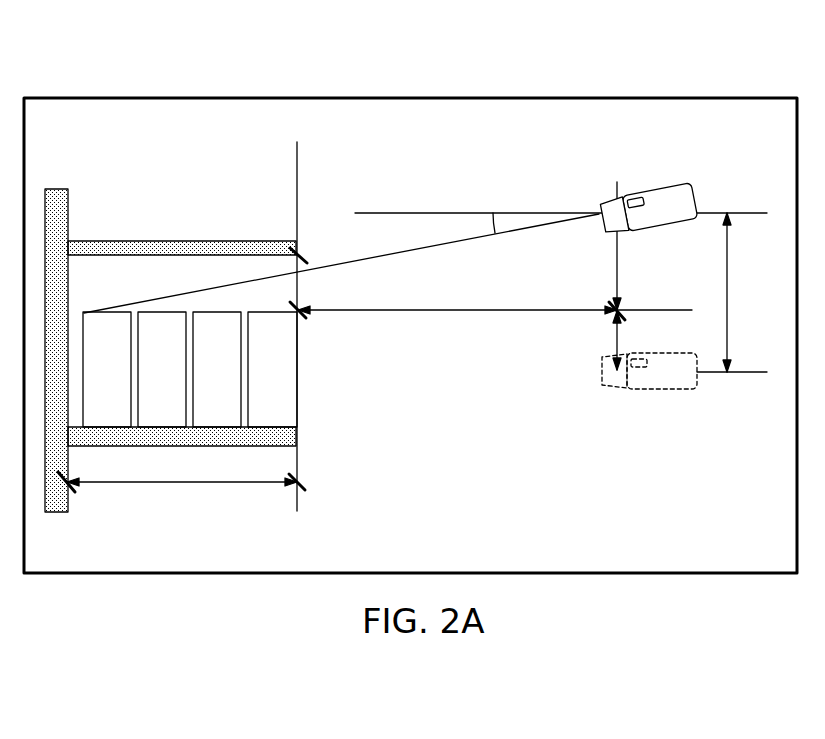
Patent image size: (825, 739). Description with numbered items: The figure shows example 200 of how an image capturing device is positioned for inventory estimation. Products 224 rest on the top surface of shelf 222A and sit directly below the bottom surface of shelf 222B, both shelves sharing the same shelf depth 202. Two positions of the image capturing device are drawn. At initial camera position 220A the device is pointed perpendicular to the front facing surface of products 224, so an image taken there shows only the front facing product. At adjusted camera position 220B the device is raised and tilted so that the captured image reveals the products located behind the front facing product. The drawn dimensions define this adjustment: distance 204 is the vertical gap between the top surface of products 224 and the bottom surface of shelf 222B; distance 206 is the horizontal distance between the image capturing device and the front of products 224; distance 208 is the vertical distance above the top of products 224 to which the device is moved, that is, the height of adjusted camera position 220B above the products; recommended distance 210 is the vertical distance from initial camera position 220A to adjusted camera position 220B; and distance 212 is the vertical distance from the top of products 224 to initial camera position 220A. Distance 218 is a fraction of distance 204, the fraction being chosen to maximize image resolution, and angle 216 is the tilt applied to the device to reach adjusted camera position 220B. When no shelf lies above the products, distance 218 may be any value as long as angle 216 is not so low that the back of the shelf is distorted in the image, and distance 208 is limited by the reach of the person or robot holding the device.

The example 200 is at (178, 78).
The shelf depth 202 is at (124, 485).
The distance 204 is at (293, 263).
The distance 206 is at (484, 312).
The distance 208 is at (620, 266).
The recommended distance 210 is at (727, 315).
The distance 212 is at (617, 336).
The angle 216 is at (458, 230).
The distance 218 is at (298, 288).
The initial camera position 220A is at (660, 392).
The adjusted camera position 220B is at (658, 185).
The shelf 222A is at (233, 447).
The shelf 222B is at (115, 240).
The products 224 is at (283, 368).